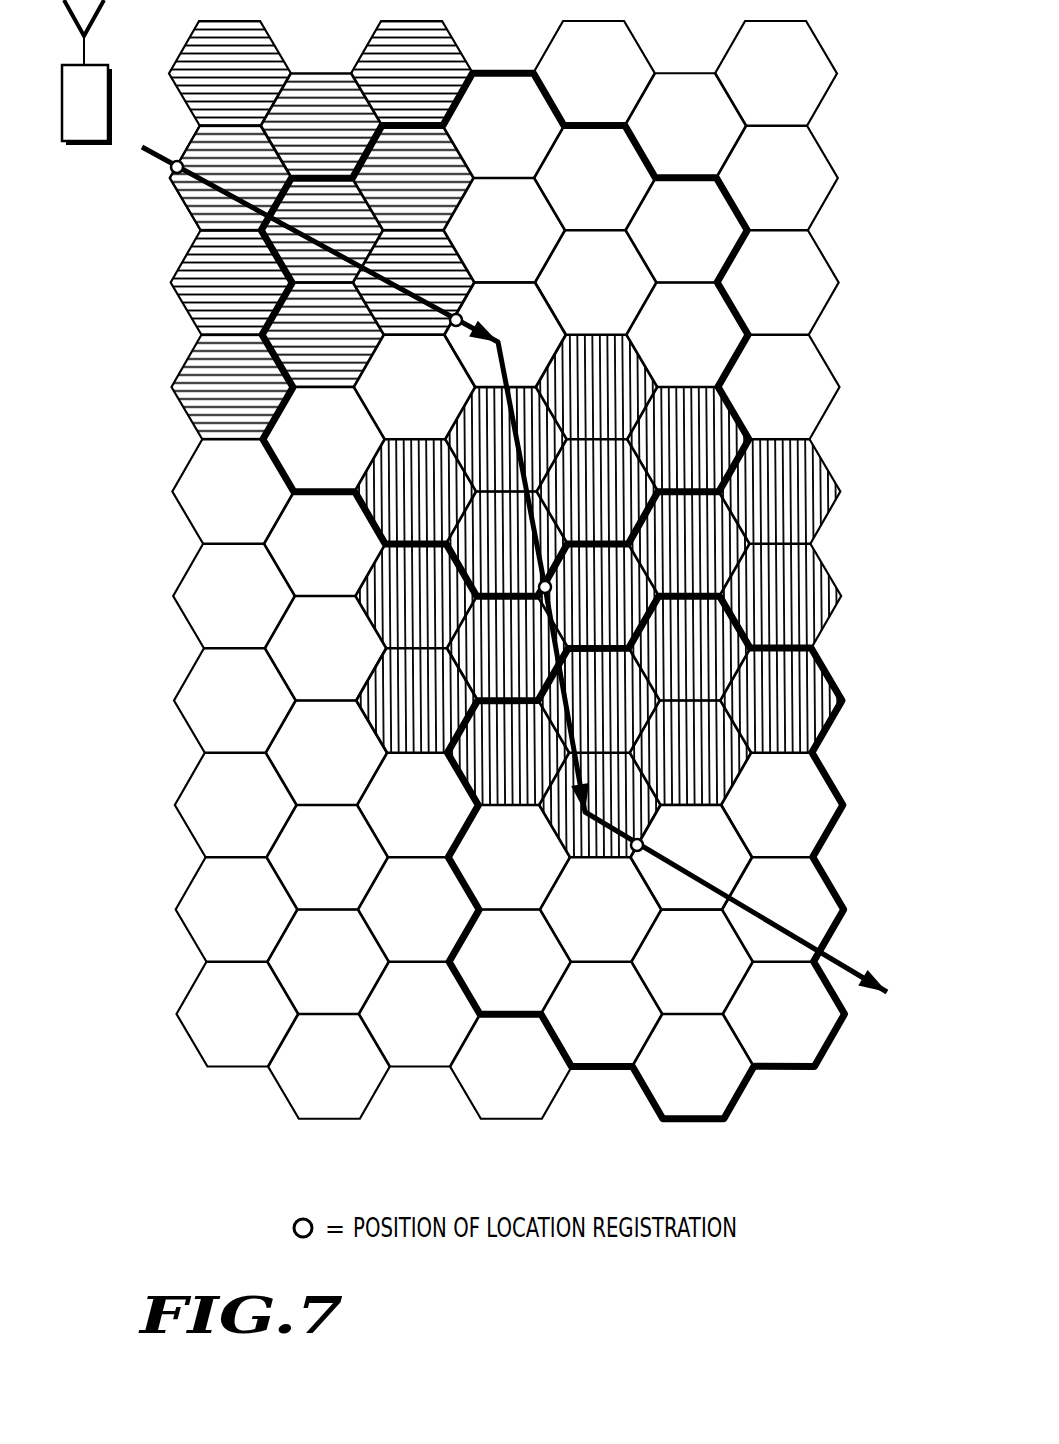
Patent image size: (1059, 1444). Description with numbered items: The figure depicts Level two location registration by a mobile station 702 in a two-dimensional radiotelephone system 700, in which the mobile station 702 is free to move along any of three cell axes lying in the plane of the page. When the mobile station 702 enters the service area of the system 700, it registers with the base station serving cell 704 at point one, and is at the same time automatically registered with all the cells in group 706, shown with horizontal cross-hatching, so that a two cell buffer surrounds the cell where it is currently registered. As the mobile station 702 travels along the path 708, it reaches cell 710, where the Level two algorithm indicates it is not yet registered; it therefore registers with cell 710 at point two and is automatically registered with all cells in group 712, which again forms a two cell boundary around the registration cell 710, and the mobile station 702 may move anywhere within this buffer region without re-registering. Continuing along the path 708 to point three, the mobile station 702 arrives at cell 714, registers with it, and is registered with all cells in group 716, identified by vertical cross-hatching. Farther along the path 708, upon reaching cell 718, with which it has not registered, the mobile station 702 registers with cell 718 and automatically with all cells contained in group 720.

The radiotelephone system 700 is at (703, 1315).
The mobile station 702 is at (92, 63).
The cell 704 is at (180, 197).
The group 706 is at (173, 268).
The path 708 is at (842, 958).
The cell 710 is at (548, 300).
The group 712 is at (266, 477).
The cell 714 is at (645, 580).
The group 716 is at (363, 733).
The cell 718 is at (650, 893).
The group 720 is at (463, 1008).